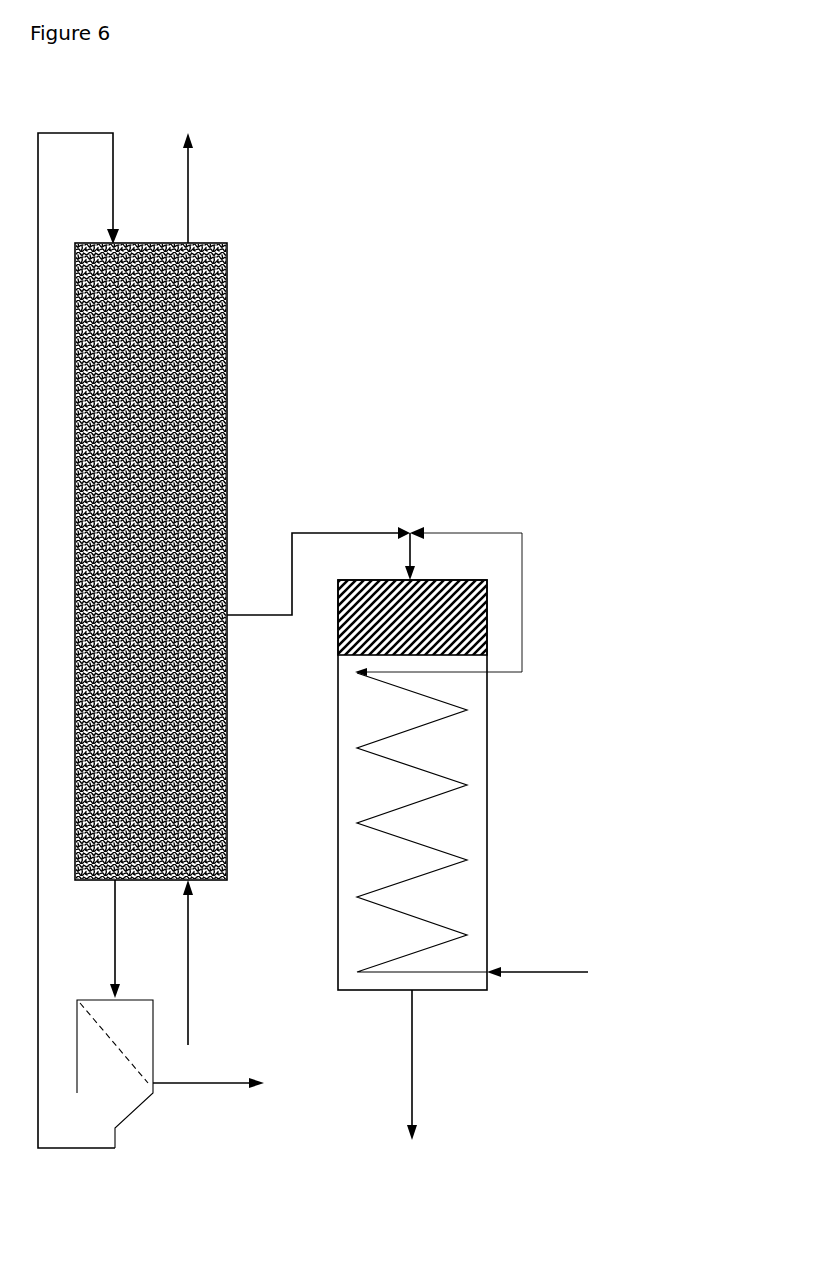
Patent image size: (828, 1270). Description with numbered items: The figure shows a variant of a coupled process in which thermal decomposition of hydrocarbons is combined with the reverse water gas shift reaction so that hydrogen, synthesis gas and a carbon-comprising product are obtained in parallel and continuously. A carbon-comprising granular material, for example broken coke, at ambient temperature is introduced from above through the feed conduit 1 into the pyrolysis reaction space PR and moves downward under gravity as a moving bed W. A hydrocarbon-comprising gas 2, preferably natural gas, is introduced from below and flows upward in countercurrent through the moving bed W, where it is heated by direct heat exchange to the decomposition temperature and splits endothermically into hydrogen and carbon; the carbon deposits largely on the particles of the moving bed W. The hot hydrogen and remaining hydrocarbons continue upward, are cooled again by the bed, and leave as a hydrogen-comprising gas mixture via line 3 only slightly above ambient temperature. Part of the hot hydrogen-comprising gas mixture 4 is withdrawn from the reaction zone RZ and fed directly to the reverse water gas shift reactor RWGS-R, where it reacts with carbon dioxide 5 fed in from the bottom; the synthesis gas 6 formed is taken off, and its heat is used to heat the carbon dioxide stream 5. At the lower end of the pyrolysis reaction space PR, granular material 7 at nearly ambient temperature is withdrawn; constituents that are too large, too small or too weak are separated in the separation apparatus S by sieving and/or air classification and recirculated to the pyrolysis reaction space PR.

The feed conduit 1 is at (113, 188).
The hydrocarbon-comprising gas 2 is at (193, 1018).
The line 3 is at (189, 224).
The hot hydrogen-comprising gas mixture 4 is at (352, 533).
The carbon dioxide 5 is at (517, 972).
The synthesis gas 6 is at (415, 1108).
The granular material 7 is at (120, 960).
The moving bed W is at (143, 355).
The pyrolysis reaction space PR is at (229, 410).
The reaction zone RZ is at (143, 588).
The reverse water gas shift reactor RWGS-R is at (490, 652).
The separation apparatus S is at (155, 1073).